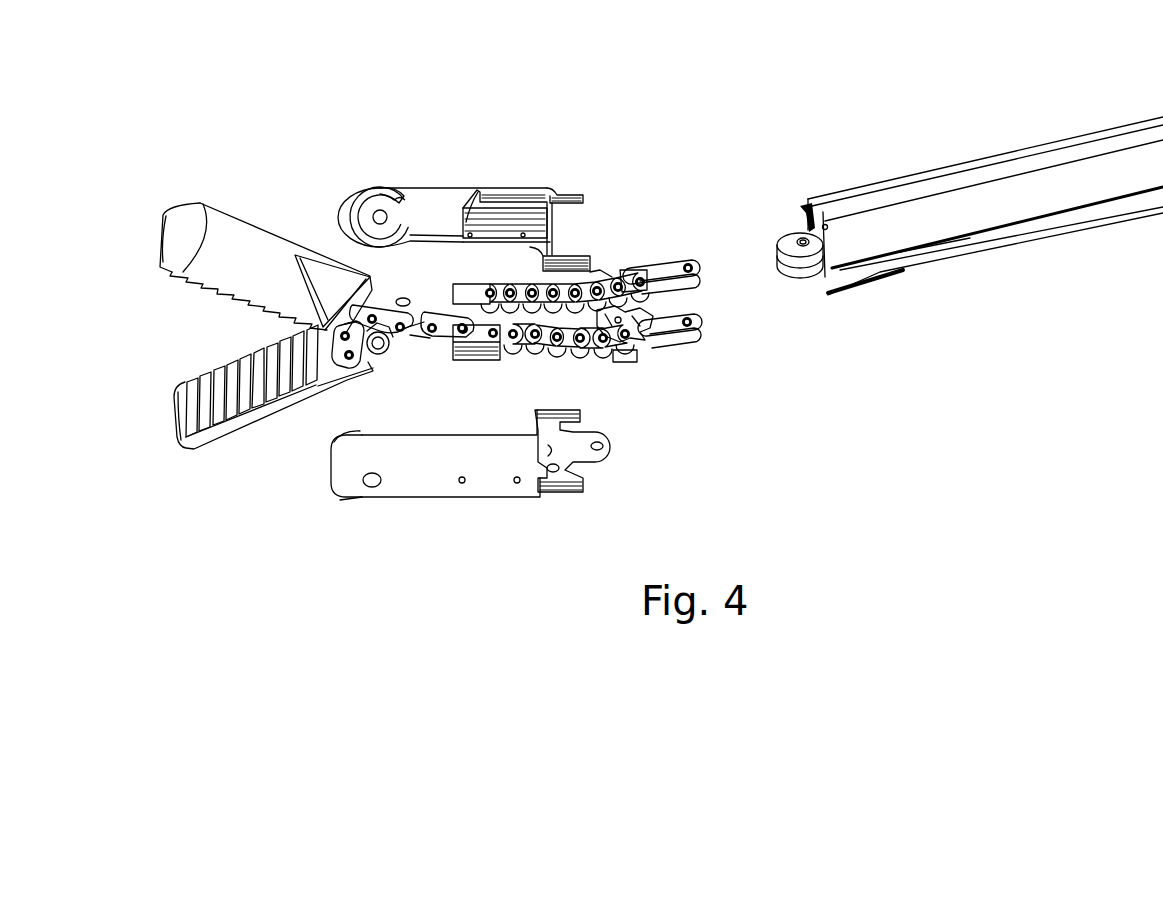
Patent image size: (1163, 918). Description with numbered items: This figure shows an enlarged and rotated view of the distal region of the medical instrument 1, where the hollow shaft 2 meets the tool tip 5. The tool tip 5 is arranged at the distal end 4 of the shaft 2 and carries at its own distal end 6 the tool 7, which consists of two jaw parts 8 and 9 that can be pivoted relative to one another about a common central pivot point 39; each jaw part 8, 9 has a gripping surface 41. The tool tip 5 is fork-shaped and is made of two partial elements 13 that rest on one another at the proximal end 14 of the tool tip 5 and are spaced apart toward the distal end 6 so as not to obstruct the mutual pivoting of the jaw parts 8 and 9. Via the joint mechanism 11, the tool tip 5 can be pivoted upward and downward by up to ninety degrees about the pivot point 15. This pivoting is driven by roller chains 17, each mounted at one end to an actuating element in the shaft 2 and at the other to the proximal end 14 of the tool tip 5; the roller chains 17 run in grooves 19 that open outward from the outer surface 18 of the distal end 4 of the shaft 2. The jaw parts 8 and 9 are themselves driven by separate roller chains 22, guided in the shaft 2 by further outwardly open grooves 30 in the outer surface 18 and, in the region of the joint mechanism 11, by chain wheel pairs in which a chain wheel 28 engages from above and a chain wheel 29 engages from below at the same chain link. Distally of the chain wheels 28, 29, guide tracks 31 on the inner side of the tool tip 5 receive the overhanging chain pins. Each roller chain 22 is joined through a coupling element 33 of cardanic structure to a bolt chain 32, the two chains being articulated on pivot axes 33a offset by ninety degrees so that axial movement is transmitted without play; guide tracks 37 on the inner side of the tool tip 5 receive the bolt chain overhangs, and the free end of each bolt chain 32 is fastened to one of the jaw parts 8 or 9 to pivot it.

The medical instrument 1 is at (565, 98).
The shaft 2 is at (945, 165).
The distal end of the shaft 4 is at (826, 295).
The tool tip 5 is at (460, 128).
The distal end of the tool tip 6 is at (345, 190).
The tool 7 is at (192, 153).
The jaw part 8 is at (187, 220).
The jaw part 9 is at (197, 452).
The joint mechanism 11 is at (690, 186).
The partial element 13 is at (465, 195).
The proximal end of the tool tip 14 is at (580, 190).
The pivot point 15 is at (803, 240).
The roller chain 17 is at (680, 262).
The outer surface 18 is at (1068, 178).
The groove 19 is at (960, 250).
The roller chain 22 is at (545, 342).
The chain wheel 28 is at (607, 272).
The chain wheel 29 is at (628, 362).
The groove 30 is at (993, 173).
The guide track 31 is at (585, 255).
The bolt chain 32 is at (345, 366).
The coupling element 33 is at (463, 300).
The pivot axis 33a is at (480, 300).
The guide track 37 is at (383, 193).
The pivot point 39 is at (378, 358).
The gripping surface 41 is at (185, 388).